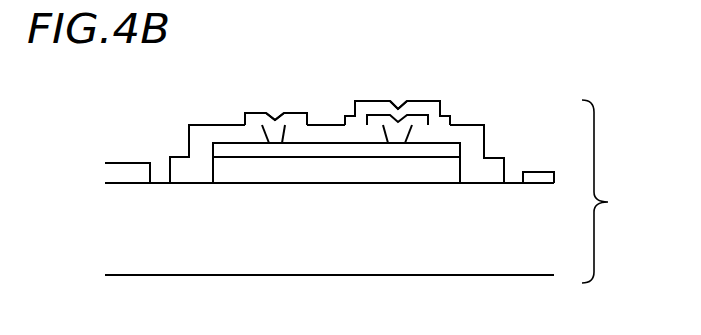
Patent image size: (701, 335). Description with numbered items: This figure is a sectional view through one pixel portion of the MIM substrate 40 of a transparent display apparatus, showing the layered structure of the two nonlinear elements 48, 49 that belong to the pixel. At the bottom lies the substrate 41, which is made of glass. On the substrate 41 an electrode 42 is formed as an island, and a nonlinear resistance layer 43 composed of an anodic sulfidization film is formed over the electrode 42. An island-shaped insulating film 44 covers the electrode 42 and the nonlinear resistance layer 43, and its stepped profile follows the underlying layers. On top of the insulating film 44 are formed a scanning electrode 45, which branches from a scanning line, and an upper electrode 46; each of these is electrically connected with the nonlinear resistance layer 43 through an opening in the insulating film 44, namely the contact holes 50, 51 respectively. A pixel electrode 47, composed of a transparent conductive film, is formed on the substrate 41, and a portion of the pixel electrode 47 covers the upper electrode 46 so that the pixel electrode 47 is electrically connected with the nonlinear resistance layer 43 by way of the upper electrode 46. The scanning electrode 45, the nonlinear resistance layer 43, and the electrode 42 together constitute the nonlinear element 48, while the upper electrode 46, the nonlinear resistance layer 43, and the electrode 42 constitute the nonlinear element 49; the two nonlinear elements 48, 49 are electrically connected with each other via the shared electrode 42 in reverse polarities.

The MIM substrate 40 is at (613, 191).
The substrate 41 is at (510, 250).
The electrode 42 is at (375, 173).
The nonlinear resistance layer 43 is at (224, 152).
The insulating film 44 is at (198, 150).
The scanning electrode 45 is at (258, 118).
The upper electrode 46 is at (390, 107).
The pixel electrode 47 is at (450, 118).
The nonlinear element 48 is at (285, 80).
The nonlinear element 49 is at (453, 60).
The contact hole 50 is at (280, 128).
The contact hole 51 is at (398, 132).